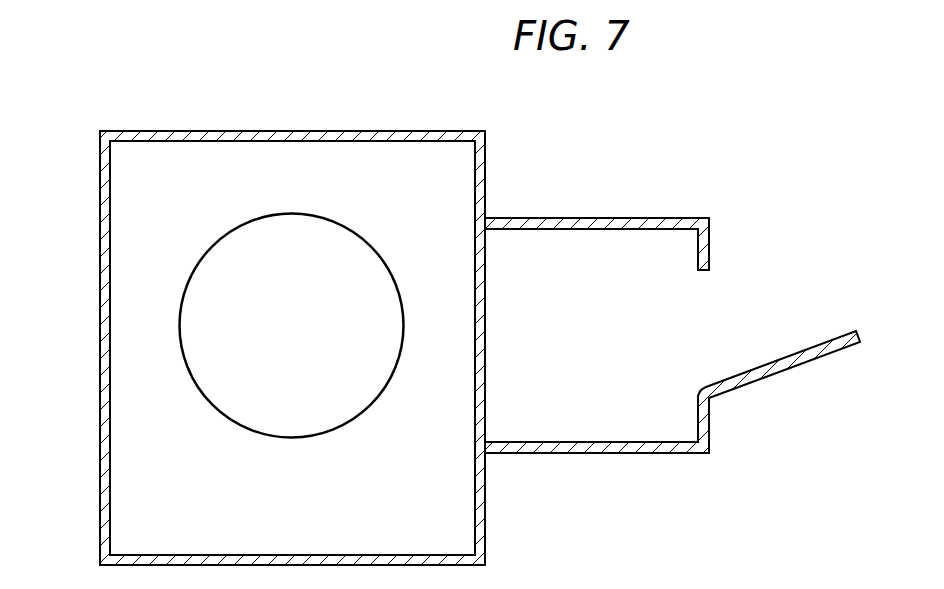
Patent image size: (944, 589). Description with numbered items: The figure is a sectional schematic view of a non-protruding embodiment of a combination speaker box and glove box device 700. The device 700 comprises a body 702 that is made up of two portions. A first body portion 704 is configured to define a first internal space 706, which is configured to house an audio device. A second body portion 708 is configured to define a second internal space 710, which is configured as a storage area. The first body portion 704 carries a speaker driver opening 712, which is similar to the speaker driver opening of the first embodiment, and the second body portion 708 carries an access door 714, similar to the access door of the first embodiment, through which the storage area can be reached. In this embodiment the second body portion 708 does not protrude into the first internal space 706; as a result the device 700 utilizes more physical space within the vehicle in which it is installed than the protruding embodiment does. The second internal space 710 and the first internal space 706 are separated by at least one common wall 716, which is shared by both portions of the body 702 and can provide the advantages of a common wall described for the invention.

The combination speaker box and glove box device 700 is at (688, 167).
The body 702 is at (100, 176).
The first body portion 704 is at (181, 131).
The first internal space 706 is at (270, 185).
The second body portion 708 is at (578, 218).
The second internal space 710 is at (617, 388).
The speaker driver opening 712 is at (186, 362).
The access door 714 is at (765, 377).
The common wall 716 is at (486, 278).